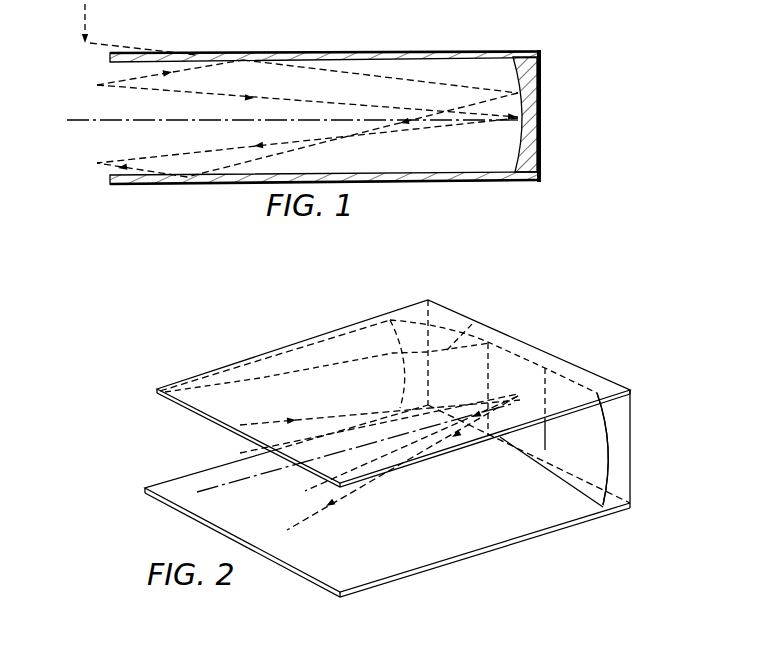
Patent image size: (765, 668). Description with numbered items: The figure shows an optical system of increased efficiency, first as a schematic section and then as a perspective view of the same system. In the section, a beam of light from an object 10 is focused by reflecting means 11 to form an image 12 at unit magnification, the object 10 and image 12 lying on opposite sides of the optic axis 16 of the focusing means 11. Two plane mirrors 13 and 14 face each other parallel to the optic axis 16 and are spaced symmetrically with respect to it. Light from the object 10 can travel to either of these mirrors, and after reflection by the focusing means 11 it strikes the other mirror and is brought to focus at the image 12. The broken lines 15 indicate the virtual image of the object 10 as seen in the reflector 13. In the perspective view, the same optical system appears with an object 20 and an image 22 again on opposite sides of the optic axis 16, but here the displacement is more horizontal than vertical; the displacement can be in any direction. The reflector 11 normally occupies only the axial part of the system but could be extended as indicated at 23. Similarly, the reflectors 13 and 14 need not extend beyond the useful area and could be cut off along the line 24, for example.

In FIG. 1, the object 10 is at (97, 85).
In FIG. 1, the reflecting means 11 is at (522, 105).
In FIG. 2, the reflecting means 11 is at (517, 372).
In FIG. 1, the image 12 is at (97, 163).
In FIG. 1, the plane mirror 13 is at (368, 52).
In FIG. 2, the plane mirror 13 is at (323, 334).
In FIG. 1, the plane mirror 14 is at (154, 184).
In FIG. 2, the plane mirror 14 is at (484, 545).
In FIG. 1, the broken lines 15 is at (88, 23).
In FIG. 1, the optic axis 16 is at (168, 120).
In FIG. 2, the optic axis 16 is at (238, 480).
In FIG. 2, the object 20 is at (240, 426).
In FIG. 2, the image 22 is at (288, 530).
In FIG. 2, the extension of reflector 23 is at (598, 446).
In FIG. 2, the cut-off line 24 is at (488, 310).